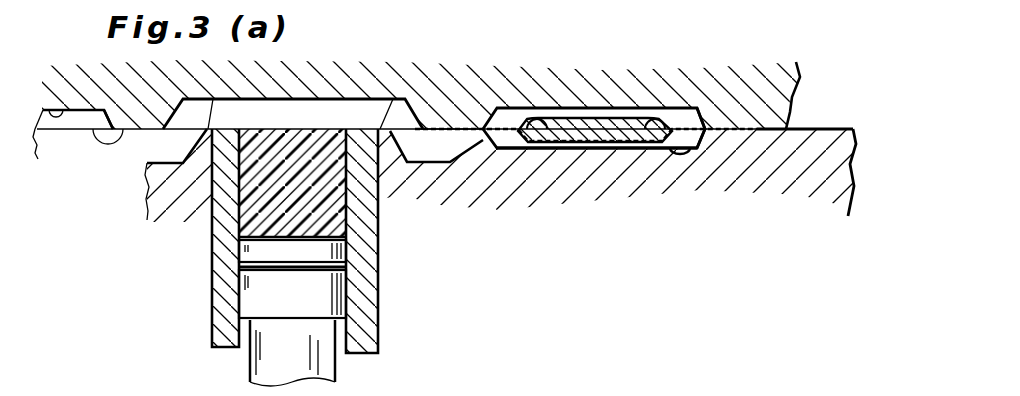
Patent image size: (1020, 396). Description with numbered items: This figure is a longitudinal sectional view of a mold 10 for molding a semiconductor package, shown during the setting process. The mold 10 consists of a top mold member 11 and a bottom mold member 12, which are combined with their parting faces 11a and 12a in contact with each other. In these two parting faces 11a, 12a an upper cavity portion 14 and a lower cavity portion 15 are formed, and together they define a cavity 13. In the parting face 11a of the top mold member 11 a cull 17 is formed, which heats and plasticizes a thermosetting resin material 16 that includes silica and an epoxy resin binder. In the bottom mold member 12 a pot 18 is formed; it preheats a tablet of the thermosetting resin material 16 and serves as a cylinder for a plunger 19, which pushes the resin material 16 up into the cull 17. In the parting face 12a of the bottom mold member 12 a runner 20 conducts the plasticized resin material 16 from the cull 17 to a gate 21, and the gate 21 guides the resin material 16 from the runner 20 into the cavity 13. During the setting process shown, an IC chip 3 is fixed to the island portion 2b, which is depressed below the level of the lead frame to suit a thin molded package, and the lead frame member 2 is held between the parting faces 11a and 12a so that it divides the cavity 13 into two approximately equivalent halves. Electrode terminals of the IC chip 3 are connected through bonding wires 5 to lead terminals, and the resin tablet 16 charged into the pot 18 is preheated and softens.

The mold 10 is at (824, 50).
The top mold member 11 is at (786, 104).
The parting face 11a is at (93, 110).
The bottom mold member 12 is at (832, 172).
The parting face 12a is at (840, 128).
The cavity 13 is at (116, 95).
The upper cavity portion 14 is at (45, 110).
The lower cavity portion 15 is at (688, 153).
The thermosetting resin material 16 is at (262, 200).
The cull 17 is at (321, 99).
The pot 18 is at (226, 258).
The plunger 19 is at (285, 255).
The lead frame member 2 is at (458, 126).
The island portion 2b is at (604, 150).
The runner 20 is at (414, 163).
The gate 21 is at (454, 149).
The IC chip 3 is at (630, 117).
The bonding wires 5 is at (544, 114).